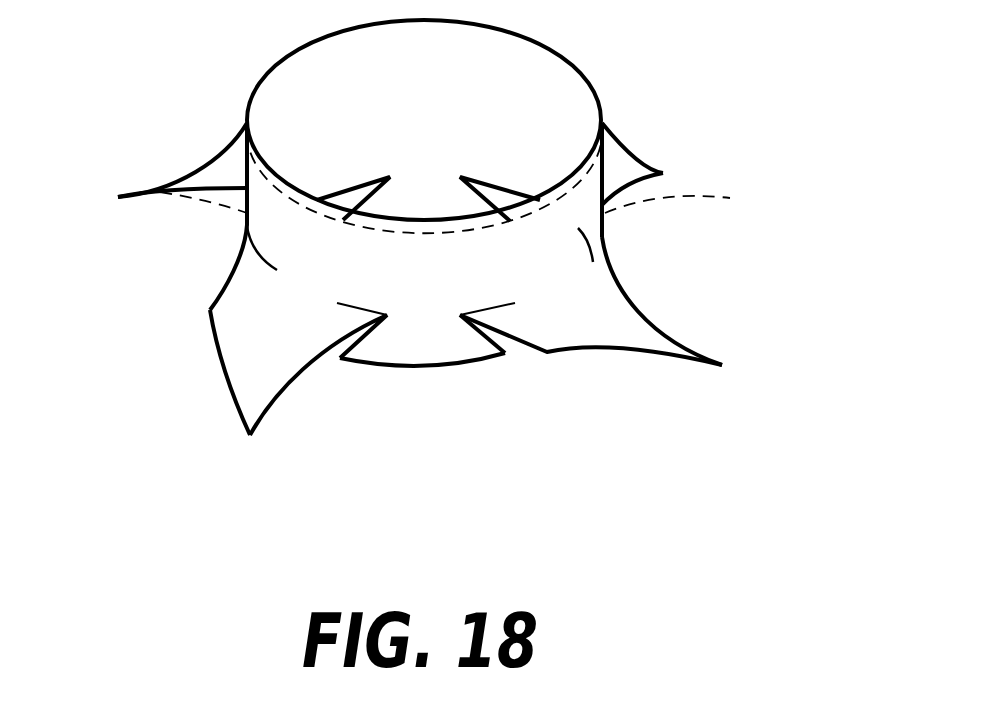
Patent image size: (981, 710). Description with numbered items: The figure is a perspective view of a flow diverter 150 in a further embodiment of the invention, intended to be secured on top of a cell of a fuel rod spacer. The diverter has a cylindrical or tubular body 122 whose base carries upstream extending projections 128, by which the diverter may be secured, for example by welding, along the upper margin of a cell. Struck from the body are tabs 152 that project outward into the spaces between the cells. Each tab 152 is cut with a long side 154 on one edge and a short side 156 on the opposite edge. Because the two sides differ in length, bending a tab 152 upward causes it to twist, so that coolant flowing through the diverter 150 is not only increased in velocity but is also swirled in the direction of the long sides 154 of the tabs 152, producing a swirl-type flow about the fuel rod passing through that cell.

The flow diverter 150 is at (451, 257).
The cylindrical or tubular body 122 is at (595, 252).
The upstream extending projections 128 is at (427, 355).
The tabs 152 is at (245, 330).
The long sides or edges 154 is at (293, 369).
The short sides or edges 156 is at (237, 268).